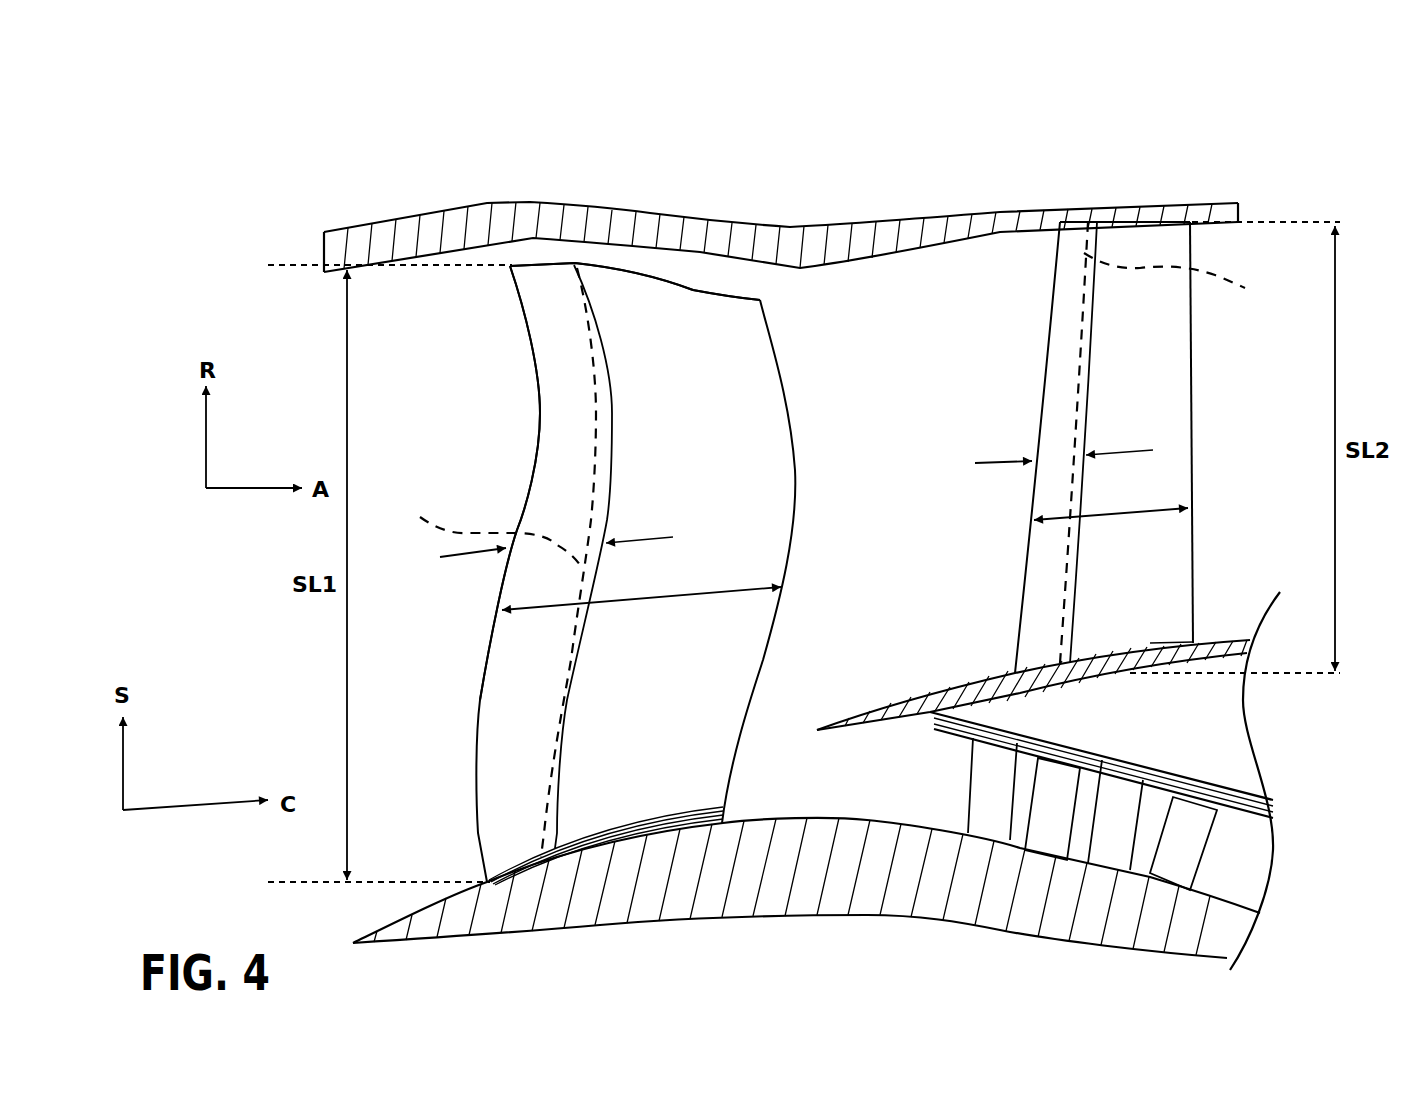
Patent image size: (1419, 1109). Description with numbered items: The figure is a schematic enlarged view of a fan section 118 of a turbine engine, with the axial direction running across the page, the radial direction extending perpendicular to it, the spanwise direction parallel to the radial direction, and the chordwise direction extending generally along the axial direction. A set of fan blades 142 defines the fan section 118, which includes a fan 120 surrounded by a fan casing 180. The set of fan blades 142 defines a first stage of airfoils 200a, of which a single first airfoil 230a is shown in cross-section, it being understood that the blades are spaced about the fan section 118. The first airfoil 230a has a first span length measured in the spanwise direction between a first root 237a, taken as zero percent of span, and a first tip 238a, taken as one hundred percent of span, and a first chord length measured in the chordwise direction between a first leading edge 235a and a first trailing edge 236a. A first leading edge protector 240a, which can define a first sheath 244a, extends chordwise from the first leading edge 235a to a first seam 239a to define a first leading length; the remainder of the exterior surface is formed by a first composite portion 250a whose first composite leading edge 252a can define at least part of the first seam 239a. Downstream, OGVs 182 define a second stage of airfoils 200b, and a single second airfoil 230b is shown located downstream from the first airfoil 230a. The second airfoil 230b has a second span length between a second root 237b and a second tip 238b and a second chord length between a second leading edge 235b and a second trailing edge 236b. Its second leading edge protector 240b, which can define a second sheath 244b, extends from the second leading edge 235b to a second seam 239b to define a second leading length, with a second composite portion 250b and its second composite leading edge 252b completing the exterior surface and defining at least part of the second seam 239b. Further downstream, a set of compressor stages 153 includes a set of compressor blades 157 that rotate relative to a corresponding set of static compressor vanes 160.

The fan section 118 is at (377, 97).
The fan casing 180 is at (388, 227).
The first stage of airfoils 200a is at (655, 262).
The first tip 238a is at (690, 288).
The second stage of airfoils 200b is at (1138, 218).
The second tip 238b is at (1168, 222).
The fan 120 is at (450, 574).
The first leading edge protector 240a is at (560, 388).
The first sheath 244a is at (489, 556).
The second leading edge protector 240b is at (1066, 318).
The second sheath 244b is at (983, 442).
The OGVs 182 is at (990, 447).
The second composite leading edge 252b is at (1174, 442).
The second trailing edge 236b is at (1192, 382).
The set of fan blades 142 is at (570, 482).
The first composite portion 250a is at (713, 472).
The first trailing edge 236a is at (795, 443).
The second composite portion 250b is at (1163, 430).
The second airfoil 230b is at (1148, 488).
The first composite leading edge 252a is at (495, 562).
The first airfoil 230a is at (733, 532).
The second seam 239b is at (1077, 542).
The second root 237b is at (1150, 643).
The first seam 239a is at (574, 638).
The second leading edge 235b is at (1018, 607).
The first leading edge 235a is at (478, 730).
The set of compressor stages 153 is at (1227, 743).
The first root 237a is at (692, 810).
The set of static compressor vanes 160 is at (985, 750).
The set of compressor blades 157 is at (1047, 787).